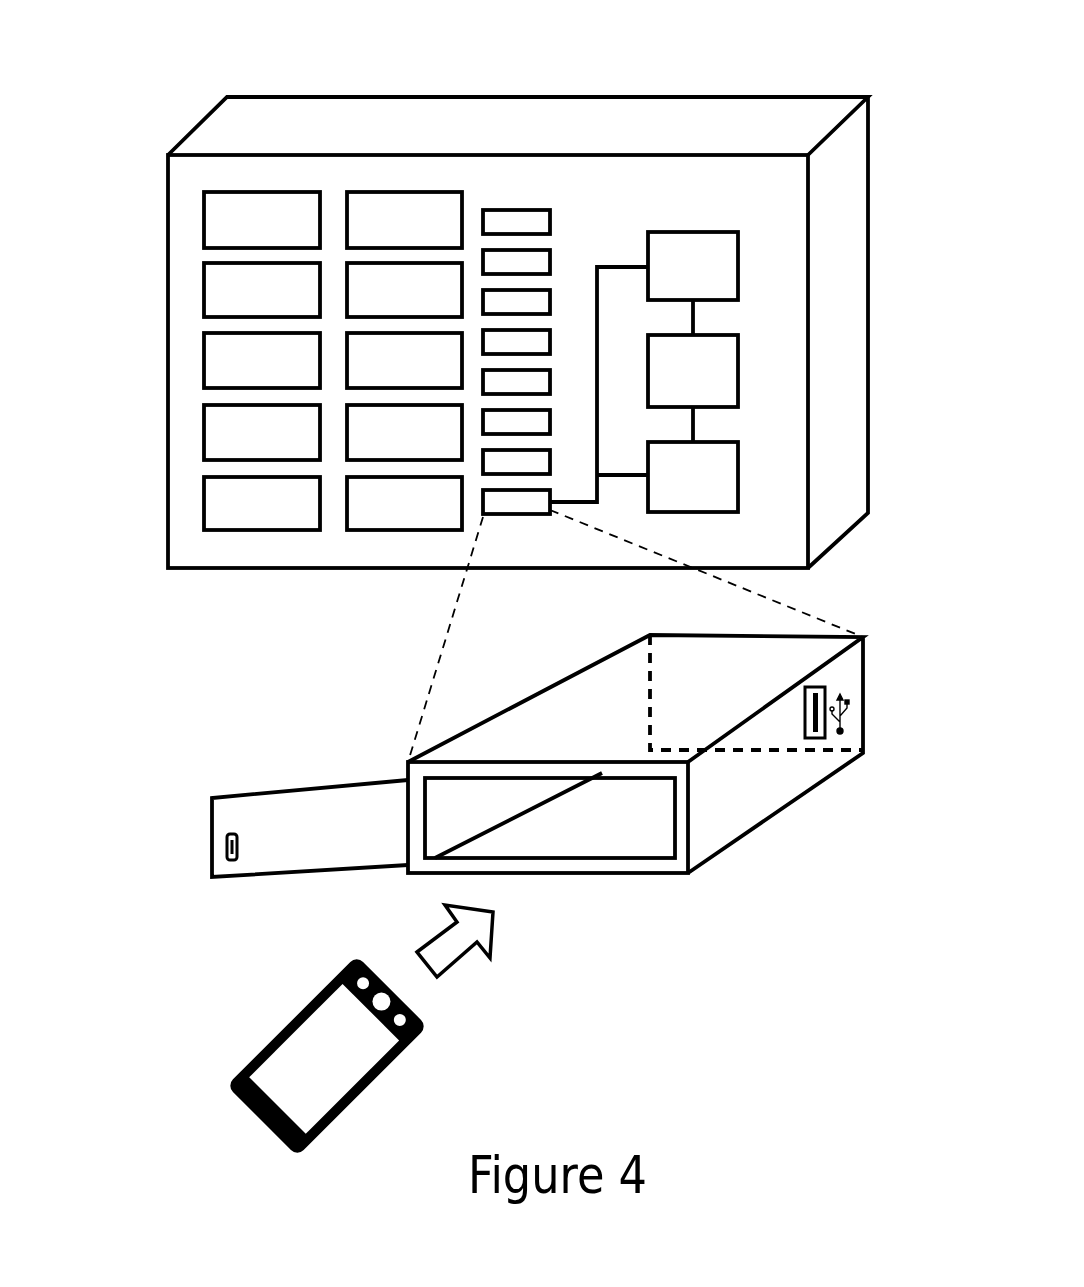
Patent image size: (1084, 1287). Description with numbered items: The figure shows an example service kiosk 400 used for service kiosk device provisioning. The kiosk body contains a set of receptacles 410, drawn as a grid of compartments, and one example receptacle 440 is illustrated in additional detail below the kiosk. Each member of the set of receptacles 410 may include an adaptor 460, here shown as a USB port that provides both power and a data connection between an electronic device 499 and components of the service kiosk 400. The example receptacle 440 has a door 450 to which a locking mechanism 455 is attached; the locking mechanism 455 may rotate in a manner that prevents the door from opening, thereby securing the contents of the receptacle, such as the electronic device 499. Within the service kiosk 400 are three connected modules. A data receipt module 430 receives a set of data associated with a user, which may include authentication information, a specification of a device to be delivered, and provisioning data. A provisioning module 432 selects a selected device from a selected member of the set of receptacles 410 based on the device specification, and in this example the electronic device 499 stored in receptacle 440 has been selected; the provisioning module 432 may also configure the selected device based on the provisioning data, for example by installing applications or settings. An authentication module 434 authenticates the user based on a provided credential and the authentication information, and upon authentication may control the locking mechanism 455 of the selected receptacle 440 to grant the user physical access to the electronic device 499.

The service kiosk 400 is at (649, 97).
The set of receptacles 410 is at (148, 192).
The data receipt module 430 is at (720, 391).
The provisioning module 432 is at (720, 286).
The authentication module 434 is at (720, 496).
The receptacle 440 is at (622, 875).
The door 450 is at (322, 785).
The locking mechanism 455 is at (223, 848).
The adaptor 460 is at (815, 687).
The electronic device 499 is at (427, 1027).